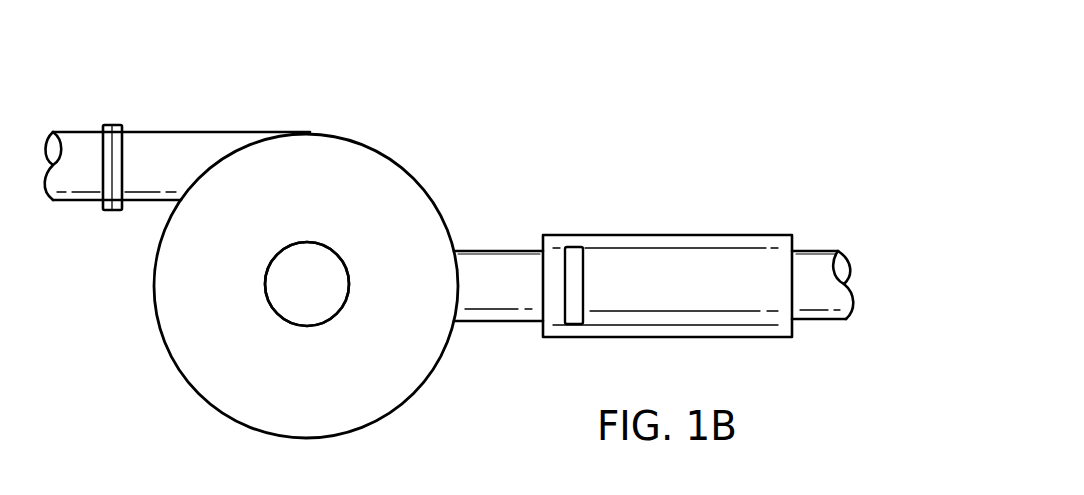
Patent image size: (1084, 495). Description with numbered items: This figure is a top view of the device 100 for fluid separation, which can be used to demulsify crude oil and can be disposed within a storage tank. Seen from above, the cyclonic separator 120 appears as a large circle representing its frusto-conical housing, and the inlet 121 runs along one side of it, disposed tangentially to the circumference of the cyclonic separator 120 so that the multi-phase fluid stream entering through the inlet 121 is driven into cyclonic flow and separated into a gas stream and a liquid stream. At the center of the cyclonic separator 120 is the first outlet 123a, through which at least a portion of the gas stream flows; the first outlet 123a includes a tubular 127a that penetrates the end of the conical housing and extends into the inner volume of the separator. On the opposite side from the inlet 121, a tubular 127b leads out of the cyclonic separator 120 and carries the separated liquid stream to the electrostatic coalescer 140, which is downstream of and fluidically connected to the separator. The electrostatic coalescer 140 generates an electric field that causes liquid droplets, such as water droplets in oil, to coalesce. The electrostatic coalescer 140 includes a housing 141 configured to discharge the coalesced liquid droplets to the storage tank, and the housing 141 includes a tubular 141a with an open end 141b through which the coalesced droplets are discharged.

The device 100 is at (640, 112).
The cyclonic separator 120 is at (142, 288).
The inlet 121 is at (148, 132).
The first outlet 123a is at (278, 299).
The tubular 127a is at (265, 284).
The tubular 127b is at (500, 250).
The electrostatic coalescer 140 is at (735, 223).
The housing 141 is at (667, 235).
The tubular 141a is at (816, 250).
The open end 141b is at (872, 287).